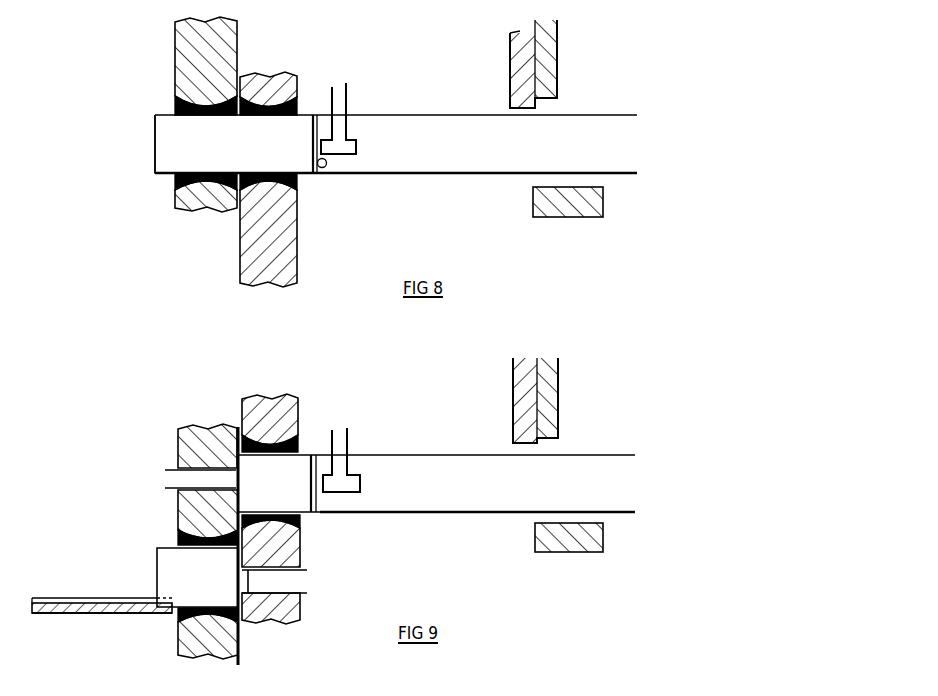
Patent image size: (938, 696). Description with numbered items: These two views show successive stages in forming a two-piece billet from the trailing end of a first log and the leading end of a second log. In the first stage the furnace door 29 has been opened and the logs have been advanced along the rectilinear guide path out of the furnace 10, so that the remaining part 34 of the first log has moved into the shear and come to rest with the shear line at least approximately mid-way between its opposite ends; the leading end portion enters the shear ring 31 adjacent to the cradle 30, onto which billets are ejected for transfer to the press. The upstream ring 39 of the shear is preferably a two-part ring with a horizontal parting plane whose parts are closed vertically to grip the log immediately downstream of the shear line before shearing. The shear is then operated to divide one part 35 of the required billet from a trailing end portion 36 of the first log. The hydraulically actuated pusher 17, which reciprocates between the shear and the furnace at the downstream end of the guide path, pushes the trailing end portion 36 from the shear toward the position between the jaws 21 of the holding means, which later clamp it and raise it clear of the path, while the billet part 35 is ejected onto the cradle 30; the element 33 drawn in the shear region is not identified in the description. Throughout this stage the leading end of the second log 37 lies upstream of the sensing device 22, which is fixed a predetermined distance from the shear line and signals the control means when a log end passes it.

In FIG. 8, the furnace 10 is at (511, 58).
In FIG. 8, the door 29 is at (510, 53).
In FIG. 9, the door 29 is at (517, 408).
In FIG. 8, the upstream ring 39 is at (296, 83).
In FIG. 9, the upstream ring 39 is at (293, 407).
In FIG. 8, the second log 37 is at (368, 122).
In FIG. 9, the second log 37 is at (418, 462).
In FIG. 8, the remaining part of the first log 34 is at (163, 180).
In FIG. 8, the shear ring 31 is at (177, 198).
In FIG. 8, the sensing device 22 is at (327, 168).
In FIG. 8, the jaws 21 is at (358, 148).
In FIG. 9, the jaws 21 is at (360, 483).
In FIG. 9, the pusher 17 is at (173, 478).
In FIG. 9, the trailing end portion 36 is at (297, 468).
In FIG. 9, the billet part 35 is at (173, 563).
In FIG. 9, the cradle 30 is at (103, 607).
In FIG. 9, the slot 33 is at (300, 582).